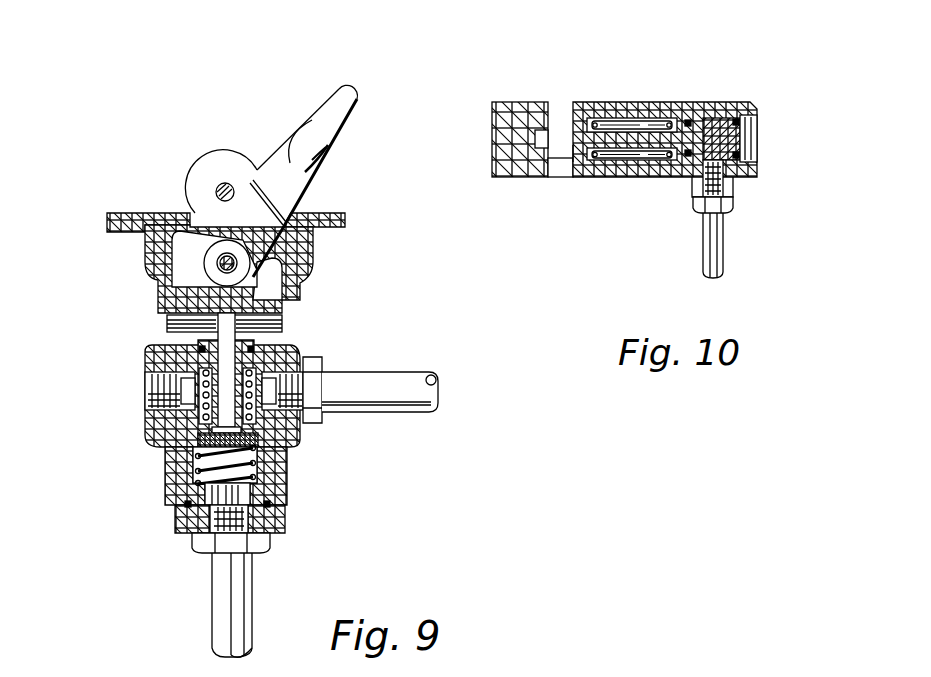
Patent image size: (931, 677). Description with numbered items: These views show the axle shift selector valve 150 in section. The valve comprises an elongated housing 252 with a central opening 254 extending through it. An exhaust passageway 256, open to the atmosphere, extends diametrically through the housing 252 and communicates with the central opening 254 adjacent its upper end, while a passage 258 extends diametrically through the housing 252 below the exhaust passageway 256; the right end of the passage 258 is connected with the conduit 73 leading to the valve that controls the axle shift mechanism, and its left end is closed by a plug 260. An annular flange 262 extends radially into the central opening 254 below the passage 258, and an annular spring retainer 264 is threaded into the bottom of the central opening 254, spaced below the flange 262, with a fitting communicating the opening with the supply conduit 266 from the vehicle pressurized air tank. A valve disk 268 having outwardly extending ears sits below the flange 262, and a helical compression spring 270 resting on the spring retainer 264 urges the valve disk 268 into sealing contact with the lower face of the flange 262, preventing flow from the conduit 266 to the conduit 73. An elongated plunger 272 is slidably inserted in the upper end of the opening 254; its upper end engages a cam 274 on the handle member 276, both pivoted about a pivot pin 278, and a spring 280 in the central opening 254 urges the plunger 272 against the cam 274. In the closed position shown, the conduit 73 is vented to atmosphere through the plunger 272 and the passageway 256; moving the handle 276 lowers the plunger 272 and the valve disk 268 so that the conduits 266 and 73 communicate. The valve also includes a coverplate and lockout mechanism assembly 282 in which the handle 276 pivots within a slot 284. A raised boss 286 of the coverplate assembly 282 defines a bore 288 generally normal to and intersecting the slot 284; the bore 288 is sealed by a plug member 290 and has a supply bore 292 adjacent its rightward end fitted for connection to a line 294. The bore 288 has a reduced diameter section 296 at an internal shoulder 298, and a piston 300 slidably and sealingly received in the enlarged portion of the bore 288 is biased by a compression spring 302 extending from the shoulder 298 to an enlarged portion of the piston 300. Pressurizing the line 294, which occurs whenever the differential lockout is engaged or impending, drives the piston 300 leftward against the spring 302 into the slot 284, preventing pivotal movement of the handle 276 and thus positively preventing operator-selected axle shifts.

In FIG. 9, the conduit 73 is at (413, 372).
In FIG. 9, the axle shift selector valve 150 is at (374, 197).
In FIG. 9, the elongated housing 252 is at (298, 347).
In FIG. 9, the central opening 254 is at (292, 364).
In FIG. 9, the exhaust passageway 256 is at (167, 321).
In FIG. 9, the passage 258 is at (320, 398).
In FIG. 9, the plug 260 is at (150, 395).
In FIG. 9, the annular flange 262 is at (257, 425).
In FIG. 9, the annular spring retainer 264 is at (275, 522).
In FIG. 9, the supply conduit 266 is at (214, 622).
In FIG. 9, the valve disk 268 is at (197, 440).
In FIG. 9, the helical compression spring 270 is at (195, 478).
In FIG. 9, the elongated plunger 272 is at (283, 311).
In FIG. 9, the cam 274 is at (185, 238).
In FIG. 9, the handle member 276 is at (342, 112).
In FIG. 9, the pivot pin 278 is at (222, 265).
In FIG. 9, the spring 280 is at (196, 350).
In FIG. 9, the coverplate and lockout mechanism assembly 282 is at (337, 226).
In FIG. 10, the coverplate and lockout mechanism assembly 282 is at (593, 93).
In FIG. 9, the slot 284 is at (290, 222).
In FIG. 10, the slot 284 is at (568, 162).
In FIG. 9, the raised boss 286 is at (239, 145).
In FIG. 10, the raised boss 286 is at (745, 101).
In FIG. 9, the bore 288 is at (223, 184).
In FIG. 10, the bore 288 is at (655, 160).
In FIG. 10, the plug member 290 is at (740, 138).
In FIG. 10, the supply bore 292 is at (722, 190).
In FIG. 10, the line 294 is at (721, 255).
In FIG. 10, the reduced diameter section 296 is at (552, 140).
In FIG. 10, the internal shoulder 298 is at (574, 150).
In FIG. 9, the piston 300 is at (219, 186).
In FIG. 10, the piston 300 is at (692, 125).
In FIG. 10, the compression spring 302 is at (648, 118).